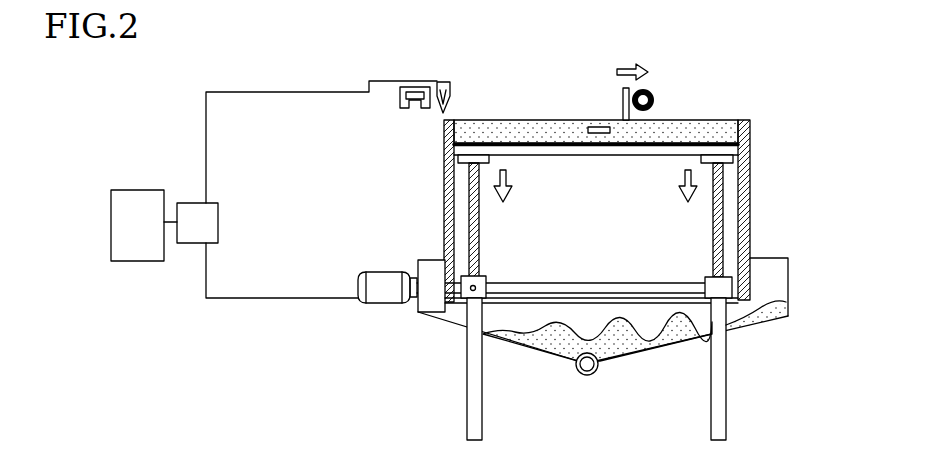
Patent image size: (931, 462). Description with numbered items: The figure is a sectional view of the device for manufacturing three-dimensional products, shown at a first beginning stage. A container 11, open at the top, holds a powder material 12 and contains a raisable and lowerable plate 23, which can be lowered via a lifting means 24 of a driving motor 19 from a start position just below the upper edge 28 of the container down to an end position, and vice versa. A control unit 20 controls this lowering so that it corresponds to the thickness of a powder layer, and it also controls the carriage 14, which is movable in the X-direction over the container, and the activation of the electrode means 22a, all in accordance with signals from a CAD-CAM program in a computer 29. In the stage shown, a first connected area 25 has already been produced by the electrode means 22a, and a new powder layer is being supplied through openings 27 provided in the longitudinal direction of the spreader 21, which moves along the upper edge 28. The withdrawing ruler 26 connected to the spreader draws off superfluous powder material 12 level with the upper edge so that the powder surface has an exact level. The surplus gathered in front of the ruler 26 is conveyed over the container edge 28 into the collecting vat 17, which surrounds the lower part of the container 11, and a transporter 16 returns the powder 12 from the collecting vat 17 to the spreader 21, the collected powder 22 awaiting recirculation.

The container 11 is at (456, 146).
The powder material 12 is at (710, 132).
The carriage 14 is at (410, 87).
The transporter 16 is at (578, 370).
The collecting vat 17 is at (762, 271).
The driving motor 19 is at (366, 276).
The control unit 20 is at (193, 203).
The spreader 21 is at (640, 90).
The collected liquid 22 is at (648, 346).
The electrode means 22a is at (443, 82).
The plate 23 is at (738, 148).
The lifting means 24 is at (471, 203).
The first connected area 25 is at (590, 127).
The withdrawing ruler 26 is at (623, 92).
The openings 27 is at (646, 110).
The upper edge 28 is at (444, 120).
The computer 29 is at (125, 190).